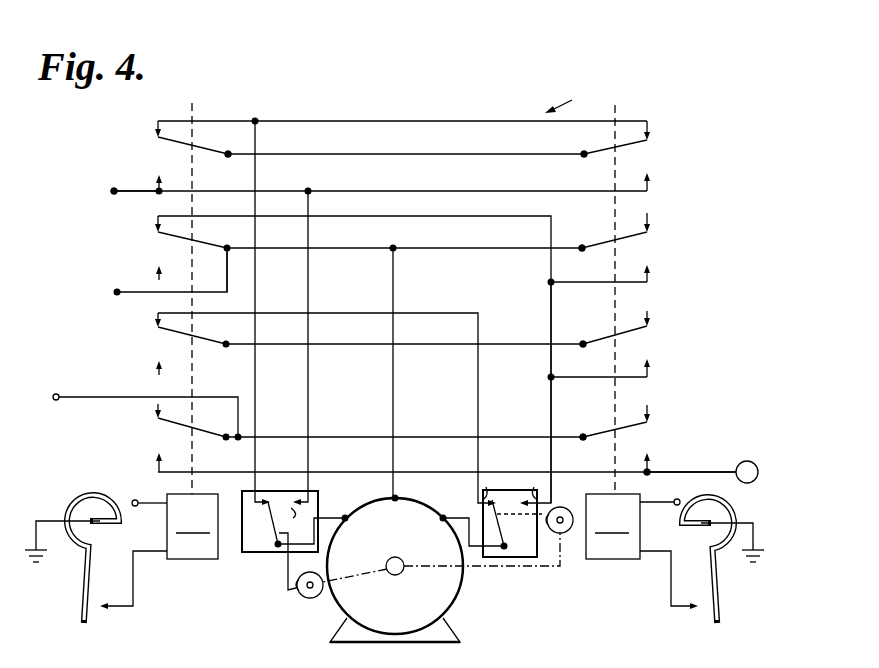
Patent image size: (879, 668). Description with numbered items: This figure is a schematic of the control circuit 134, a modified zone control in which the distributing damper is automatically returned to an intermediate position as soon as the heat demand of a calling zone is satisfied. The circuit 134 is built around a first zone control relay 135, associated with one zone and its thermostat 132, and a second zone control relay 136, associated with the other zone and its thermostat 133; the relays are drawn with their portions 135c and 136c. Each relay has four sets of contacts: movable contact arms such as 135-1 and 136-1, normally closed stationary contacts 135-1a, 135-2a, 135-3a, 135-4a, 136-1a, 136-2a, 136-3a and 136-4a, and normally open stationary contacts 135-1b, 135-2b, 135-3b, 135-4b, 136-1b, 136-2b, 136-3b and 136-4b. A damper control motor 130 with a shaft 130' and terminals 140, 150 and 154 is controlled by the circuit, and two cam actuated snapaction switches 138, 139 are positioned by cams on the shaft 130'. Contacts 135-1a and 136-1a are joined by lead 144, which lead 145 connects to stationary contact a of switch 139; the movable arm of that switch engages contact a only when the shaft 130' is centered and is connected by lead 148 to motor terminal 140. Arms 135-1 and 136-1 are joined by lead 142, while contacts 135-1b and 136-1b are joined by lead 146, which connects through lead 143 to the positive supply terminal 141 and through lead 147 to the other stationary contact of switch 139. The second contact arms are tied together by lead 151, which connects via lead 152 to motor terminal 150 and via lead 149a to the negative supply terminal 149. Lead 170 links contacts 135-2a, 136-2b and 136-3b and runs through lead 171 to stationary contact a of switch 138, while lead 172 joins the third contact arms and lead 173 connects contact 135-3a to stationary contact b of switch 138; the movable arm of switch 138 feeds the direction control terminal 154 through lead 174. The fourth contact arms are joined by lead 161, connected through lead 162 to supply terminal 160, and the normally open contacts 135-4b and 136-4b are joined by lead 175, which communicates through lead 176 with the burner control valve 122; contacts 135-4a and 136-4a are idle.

The burner control valve 122 is at (752, 461).
The damper control motor 130 is at (411, 570).
The motor shaft 130' is at (434, 555).
The thermostat 132 is at (84, 585).
The thermostat 133 is at (690, 614).
The control circuit 134 is at (573, 99).
The first zone control relay 135 is at (197, 570).
The detector control 135c is at (192, 526).
The movable contact arm 135-1 is at (198, 139).
The normally closed stationary contact 135-1a is at (134, 127).
The normally open stationary contact 135-1b is at (165, 188).
The normally closed stationary contact 135-2a is at (160, 218).
The normally open stationary contact 135-2b is at (156, 278).
The normally closed stationary contact 135-3a is at (155, 318).
The normally open stationary contact 135-3b is at (156, 371).
The normally closed stationary contact 135-4a is at (157, 402).
The normally open stationary contact 135-4b is at (156, 471).
The second zone control relay 136 is at (603, 572).
The detector control 136c is at (613, 526).
The movable contact arm 136-1 is at (650, 143).
The normally closed stationary contact 136-1a is at (656, 128).
The normally open stationary contact 136-1b is at (652, 191).
The normally closed stationary contact 136-2a is at (650, 213).
The normally open stationary contact 136-2b is at (652, 282).
The normally closed stationary contact 136-3a is at (650, 311).
The normally open stationary contact 136-3b is at (652, 377).
The normally closed stationary contact 136-4a is at (650, 405).
The normally open stationary contact 136-4b is at (651, 460).
The cam actuated snapaction switch 138 is at (515, 553).
The cam actuated snapaction switch 139 is at (265, 553).
The motor terminal 140 is at (348, 522).
The positive supply terminal 141 is at (114, 190).
The lead 142 is at (420, 154).
The lead 143 is at (128, 195).
The lead 144 is at (350, 121).
The lead 145 is at (255, 285).
The lead 146 is at (414, 191).
The lead 147 is at (308, 285).
The lead 148 is at (338, 518).
The negative supply terminal 149 is at (108, 292).
The lead 149a is at (180, 292).
The motor terminal 150 is at (398, 502).
The lead 151 is at (447, 253).
The lead 152 is at (393, 392).
The direction control terminal 154 is at (440, 522).
The supply terminal 160 is at (53, 394).
The lead 161 is at (431, 437).
The lead 162 is at (93, 397).
The lead 170 is at (515, 216).
The lead 171 is at (551, 425).
The lead 172 is at (338, 344).
The lead 173 is at (355, 313).
The lead 174 is at (446, 514).
The lead 175 is at (416, 472).
The lead 176 is at (690, 472).